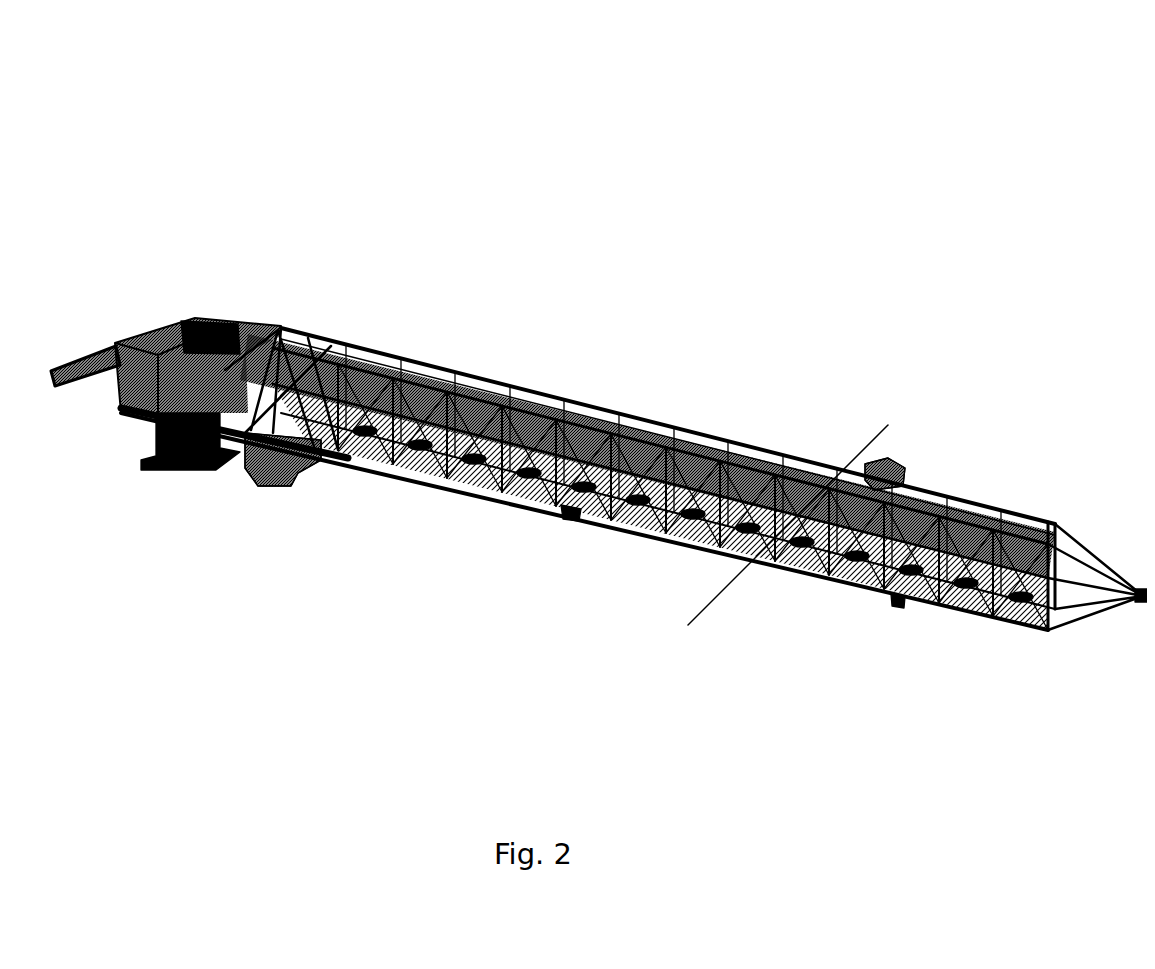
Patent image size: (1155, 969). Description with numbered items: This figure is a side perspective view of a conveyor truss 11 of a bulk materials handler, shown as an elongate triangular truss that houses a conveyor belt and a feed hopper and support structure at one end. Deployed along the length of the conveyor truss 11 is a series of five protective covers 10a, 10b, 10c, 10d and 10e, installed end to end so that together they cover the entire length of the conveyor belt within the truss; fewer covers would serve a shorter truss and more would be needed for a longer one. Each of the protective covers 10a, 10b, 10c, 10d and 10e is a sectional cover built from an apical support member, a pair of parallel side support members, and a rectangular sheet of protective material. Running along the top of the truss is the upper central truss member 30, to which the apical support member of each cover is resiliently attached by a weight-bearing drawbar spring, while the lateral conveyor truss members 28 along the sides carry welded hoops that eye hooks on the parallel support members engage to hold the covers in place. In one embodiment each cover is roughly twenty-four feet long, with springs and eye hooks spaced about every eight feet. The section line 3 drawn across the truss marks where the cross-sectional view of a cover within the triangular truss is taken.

The conveyor truss 11 is at (539, 275).
The protective cover 10a is at (273, 318).
The protective cover 10b is at (445, 372).
The protective cover 10c is at (608, 440).
The protective cover 10d is at (740, 427).
The protective cover 10e is at (1000, 500).
The upper central truss member 30 is at (403, 337).
The lateral conveyor truss member 28 is at (507, 487).
The section line 3 is at (880, 417).